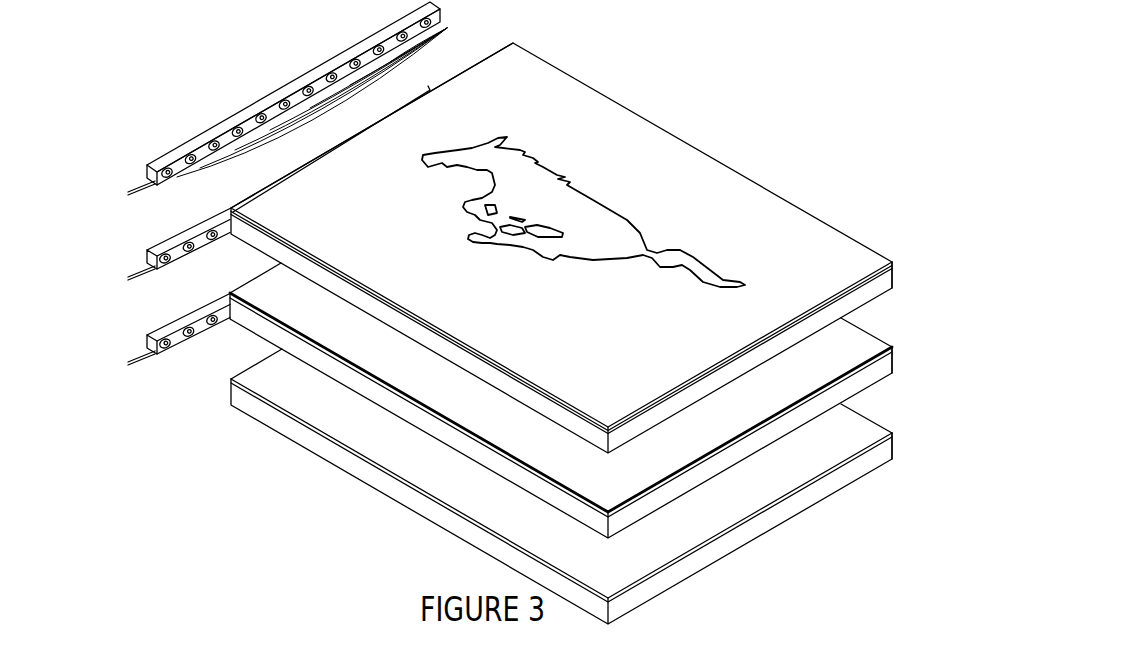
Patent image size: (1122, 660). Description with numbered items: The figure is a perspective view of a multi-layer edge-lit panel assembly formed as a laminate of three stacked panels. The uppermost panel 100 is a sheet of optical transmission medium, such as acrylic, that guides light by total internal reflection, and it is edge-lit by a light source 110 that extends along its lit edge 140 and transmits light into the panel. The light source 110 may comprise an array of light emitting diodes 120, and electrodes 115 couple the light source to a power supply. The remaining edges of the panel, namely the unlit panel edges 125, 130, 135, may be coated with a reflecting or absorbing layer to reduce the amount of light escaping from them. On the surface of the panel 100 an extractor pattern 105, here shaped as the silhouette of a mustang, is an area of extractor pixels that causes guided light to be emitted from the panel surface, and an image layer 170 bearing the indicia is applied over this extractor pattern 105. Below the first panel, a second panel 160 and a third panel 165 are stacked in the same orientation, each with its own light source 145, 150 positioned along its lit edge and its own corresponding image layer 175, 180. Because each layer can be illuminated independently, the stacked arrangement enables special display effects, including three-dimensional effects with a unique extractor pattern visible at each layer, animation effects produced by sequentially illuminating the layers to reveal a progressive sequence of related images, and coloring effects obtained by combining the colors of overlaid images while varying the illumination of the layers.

The panel 100 is at (613, 110).
The extractor pattern 105 is at (600, 220).
The light source 110 is at (293, 81).
The electrodes 115 is at (131, 190).
The light emitting diodes 120 is at (447, 28).
The unlit panel edge 125 is at (742, 175).
The unlit panel edge 130 is at (738, 370).
The unlit panel edge 135 is at (347, 283).
The lit edge 140 is at (475, 64).
The light source 145 is at (180, 256).
The light source 150 is at (177, 341).
The panel 160 is at (298, 324).
The panel 165 is at (395, 453).
The image layer 170 is at (889, 278).
The image layer 175 is at (890, 360).
The image layer 180 is at (886, 441).